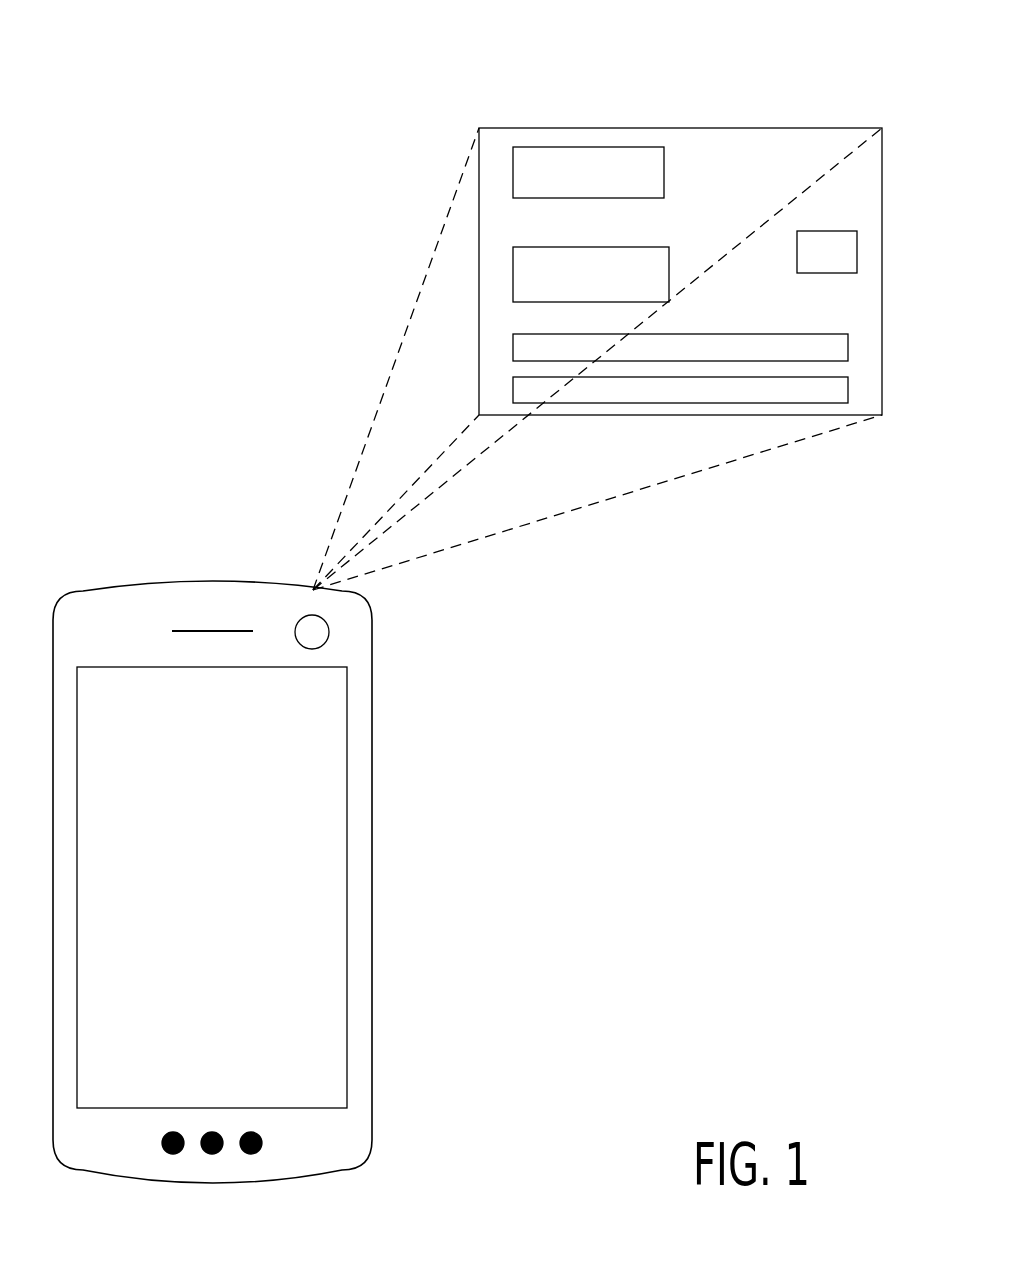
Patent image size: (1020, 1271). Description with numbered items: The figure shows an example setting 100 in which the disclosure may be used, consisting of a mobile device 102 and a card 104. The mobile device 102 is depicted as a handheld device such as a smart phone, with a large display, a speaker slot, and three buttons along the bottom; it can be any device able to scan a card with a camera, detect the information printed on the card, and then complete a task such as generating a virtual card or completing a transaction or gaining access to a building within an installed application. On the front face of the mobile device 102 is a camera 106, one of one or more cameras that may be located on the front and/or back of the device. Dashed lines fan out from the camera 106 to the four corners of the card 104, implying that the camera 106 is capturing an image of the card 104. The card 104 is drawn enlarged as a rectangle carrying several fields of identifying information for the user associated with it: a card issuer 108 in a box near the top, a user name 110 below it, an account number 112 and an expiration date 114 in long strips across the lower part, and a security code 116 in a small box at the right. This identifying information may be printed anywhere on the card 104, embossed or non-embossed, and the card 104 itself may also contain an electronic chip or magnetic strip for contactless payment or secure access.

The setting 100 is at (124, 116).
The mobile device 102 is at (372, 800).
The card 104 is at (547, 128).
The camera 106 is at (327, 640).
The card issuer 108 is at (647, 147).
The user name 110 is at (669, 247).
The account number 112 is at (848, 333).
The expiration date 114 is at (848, 377).
The security code 116 is at (857, 231).